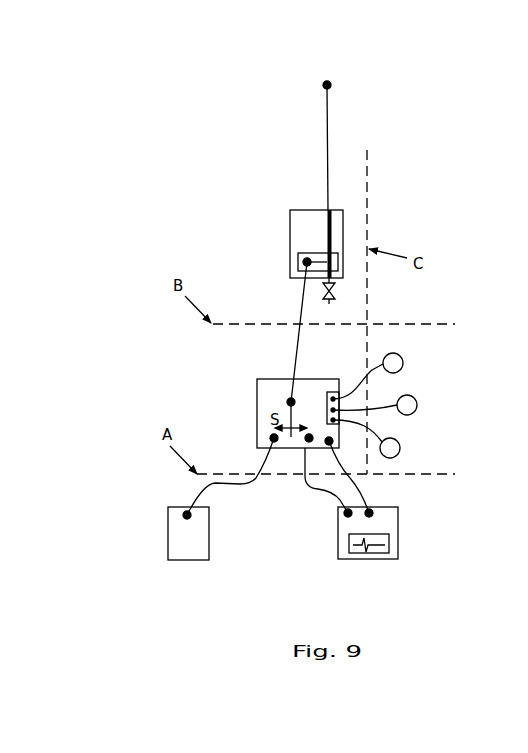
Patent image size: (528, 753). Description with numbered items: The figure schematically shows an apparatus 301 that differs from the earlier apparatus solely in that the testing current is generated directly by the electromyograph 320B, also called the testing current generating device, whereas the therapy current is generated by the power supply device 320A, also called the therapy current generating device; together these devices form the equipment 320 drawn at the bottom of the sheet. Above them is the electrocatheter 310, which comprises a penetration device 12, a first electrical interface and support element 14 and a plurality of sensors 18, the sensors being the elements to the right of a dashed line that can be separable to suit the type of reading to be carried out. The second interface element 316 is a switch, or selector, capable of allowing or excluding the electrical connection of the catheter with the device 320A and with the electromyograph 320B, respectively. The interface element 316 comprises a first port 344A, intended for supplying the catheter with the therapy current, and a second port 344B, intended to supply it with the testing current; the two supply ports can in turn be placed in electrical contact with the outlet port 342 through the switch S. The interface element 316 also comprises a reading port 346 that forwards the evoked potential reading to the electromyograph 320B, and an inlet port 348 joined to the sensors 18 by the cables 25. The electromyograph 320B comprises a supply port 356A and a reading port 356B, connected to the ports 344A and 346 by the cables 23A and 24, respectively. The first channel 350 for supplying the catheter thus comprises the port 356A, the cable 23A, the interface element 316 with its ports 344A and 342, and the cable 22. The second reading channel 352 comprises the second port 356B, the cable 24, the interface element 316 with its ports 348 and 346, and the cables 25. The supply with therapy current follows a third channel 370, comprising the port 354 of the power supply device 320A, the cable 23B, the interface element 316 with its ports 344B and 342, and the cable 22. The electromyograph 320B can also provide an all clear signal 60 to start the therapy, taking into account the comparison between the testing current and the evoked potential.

The apparatus 301 is at (197, 95).
The electrocatheter 310 is at (222, 197).
The penetration device 12 is at (326, 148).
The first electrical interface and support element 14 is at (288, 243).
The electrical connection cable 22 is at (296, 355).
The second interface element 316 is at (255, 406).
The outlet port 342 is at (291, 402).
The inlet port 348 is at (330, 394).
The electrical connection cables 25 is at (353, 391).
The sensors 18 is at (393, 363).
The second port 344B is at (274, 438).
The first port 344A is at (309, 438).
The reading port 346 is at (331, 443).
The cable 23B is at (200, 486).
The third channel 370 is at (209, 487).
The cable 23A is at (313, 489).
The first channel 350 is at (334, 492).
The cable 24 is at (357, 483).
The second reading channel 352 is at (367, 499).
The port 354 is at (187, 515).
The power supply device 320A is at (182, 548).
The reservoir assembly 320 is at (120, 548).
The electromyograph 320B is at (393, 553).
The all clear signal 60 is at (364, 548).
The supply port 356A is at (348, 513).
The reading port 356B is at (369, 513).